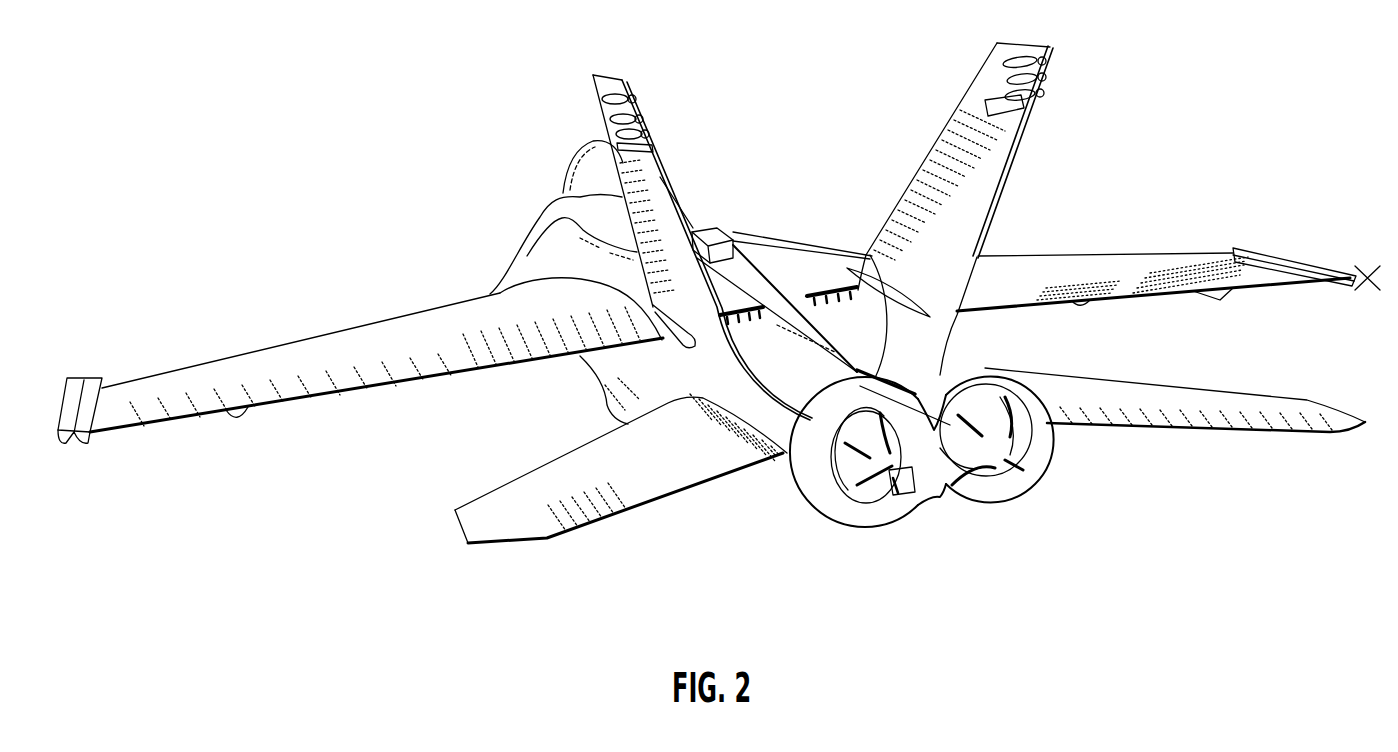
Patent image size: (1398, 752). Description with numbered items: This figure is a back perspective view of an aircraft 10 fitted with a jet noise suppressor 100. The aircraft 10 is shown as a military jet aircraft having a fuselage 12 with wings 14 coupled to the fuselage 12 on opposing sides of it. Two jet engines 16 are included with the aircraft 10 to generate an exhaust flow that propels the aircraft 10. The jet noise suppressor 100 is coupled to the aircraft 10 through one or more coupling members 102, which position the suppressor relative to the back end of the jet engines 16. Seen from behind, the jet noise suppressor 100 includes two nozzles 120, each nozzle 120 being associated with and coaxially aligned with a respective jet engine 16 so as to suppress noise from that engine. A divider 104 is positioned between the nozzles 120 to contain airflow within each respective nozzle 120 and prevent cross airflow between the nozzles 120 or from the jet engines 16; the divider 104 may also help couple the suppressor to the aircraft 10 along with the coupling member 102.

The aircraft 10 is at (471, 142).
The fuselage 12 is at (770, 248).
The wings 14 is at (1123, 265).
The jet engines 16 is at (958, 336).
The jet noise suppressor 100 is at (1050, 452).
The coupling members 102 is at (768, 395).
The divider 104 is at (920, 470).
The nozzles 120 is at (891, 528).